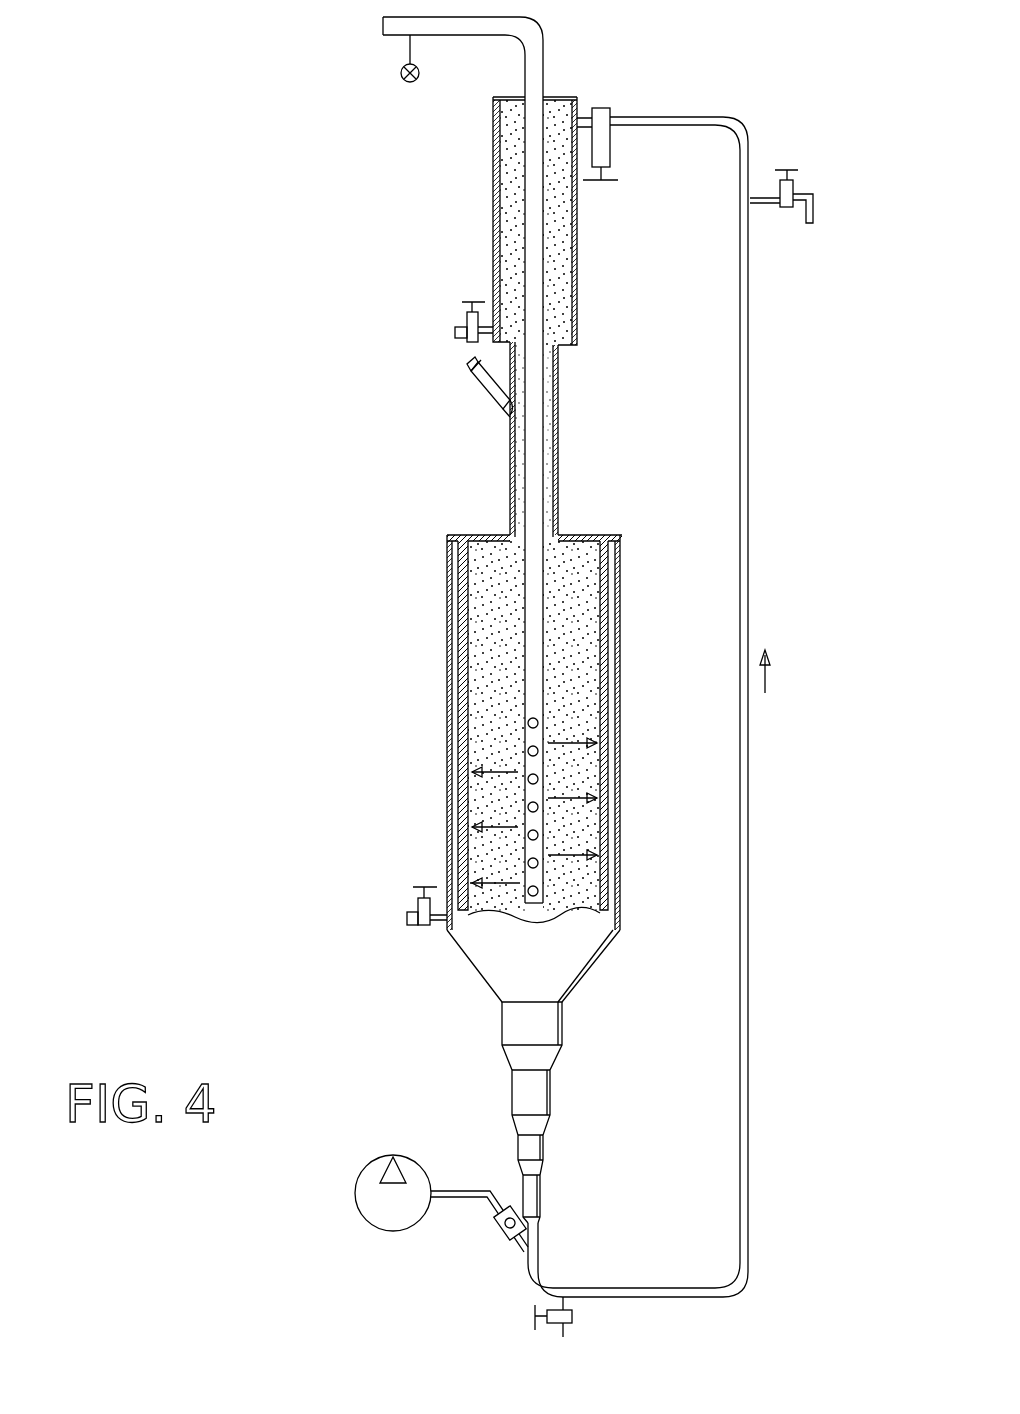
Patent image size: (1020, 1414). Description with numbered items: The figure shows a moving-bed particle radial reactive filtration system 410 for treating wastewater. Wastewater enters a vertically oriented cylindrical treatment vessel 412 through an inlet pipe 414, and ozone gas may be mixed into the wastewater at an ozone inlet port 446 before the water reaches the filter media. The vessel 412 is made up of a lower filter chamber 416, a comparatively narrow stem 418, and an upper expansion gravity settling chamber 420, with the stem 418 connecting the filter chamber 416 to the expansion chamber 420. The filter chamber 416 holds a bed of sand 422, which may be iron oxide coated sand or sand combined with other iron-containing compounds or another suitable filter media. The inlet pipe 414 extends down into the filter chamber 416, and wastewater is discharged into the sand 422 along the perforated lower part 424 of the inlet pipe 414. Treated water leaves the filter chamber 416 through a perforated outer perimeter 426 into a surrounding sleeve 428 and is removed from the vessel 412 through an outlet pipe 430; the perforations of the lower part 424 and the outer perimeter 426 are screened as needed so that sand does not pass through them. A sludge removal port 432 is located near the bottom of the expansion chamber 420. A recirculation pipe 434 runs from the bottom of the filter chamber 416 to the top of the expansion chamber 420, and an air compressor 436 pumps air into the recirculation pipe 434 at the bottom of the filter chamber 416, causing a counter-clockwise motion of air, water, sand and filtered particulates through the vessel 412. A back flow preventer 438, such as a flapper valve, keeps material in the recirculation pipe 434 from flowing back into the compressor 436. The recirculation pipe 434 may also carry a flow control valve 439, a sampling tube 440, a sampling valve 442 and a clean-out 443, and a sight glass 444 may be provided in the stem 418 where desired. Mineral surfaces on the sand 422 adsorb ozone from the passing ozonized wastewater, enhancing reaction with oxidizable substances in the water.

The moving-bed particle radial reactive filtration system 410 is at (802, 62).
The treatment vessel 412 is at (338, 255).
The inlet pipe 414 is at (543, 70).
The filter chamber 416 is at (460, 620).
The stem 418 is at (510, 460).
The expansion gravity settling chamber 420 is at (493, 165).
The bed of sand 422 is at (515, 218).
The perforated lower part 424 is at (535, 905).
The perforated outer perimeter 426 is at (460, 755).
The sleeve 428 is at (450, 712).
The outlet pipe 430 is at (410, 920).
The sludge removal port 432 is at (460, 340).
The recirculation pipe 434 is at (750, 758).
The air compressor 436 is at (354, 1190).
The back flow preventer 438 is at (498, 1222).
The flow control valve 439 is at (607, 108).
The sampling tube 440 is at (765, 203).
The sampling valve 442 is at (793, 190).
The clean-out 443 is at (572, 1318).
The sight glass 444 is at (490, 385).
The ozone inlet port 446 is at (415, 48).